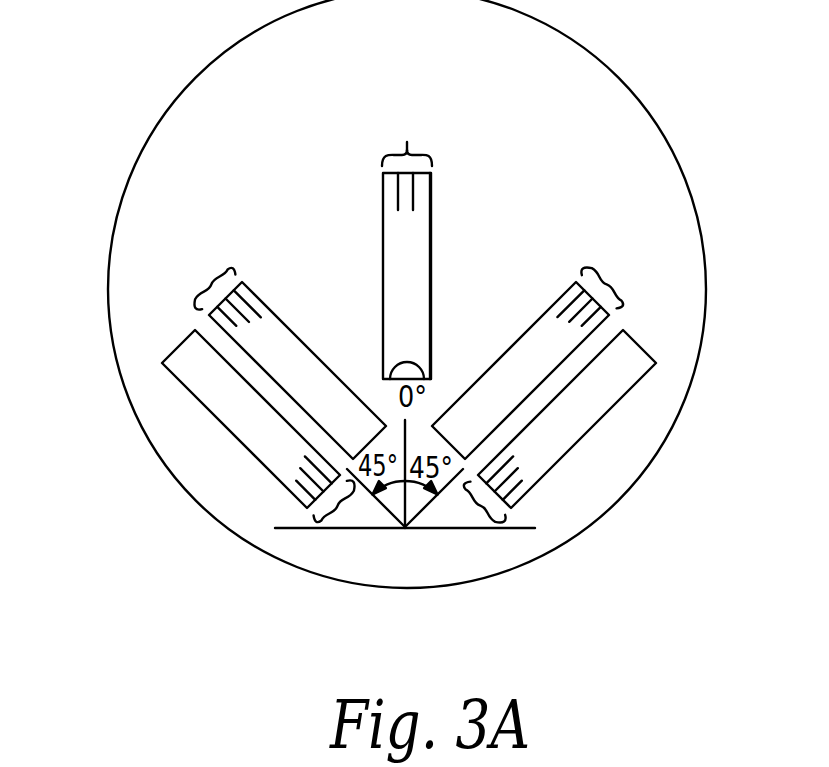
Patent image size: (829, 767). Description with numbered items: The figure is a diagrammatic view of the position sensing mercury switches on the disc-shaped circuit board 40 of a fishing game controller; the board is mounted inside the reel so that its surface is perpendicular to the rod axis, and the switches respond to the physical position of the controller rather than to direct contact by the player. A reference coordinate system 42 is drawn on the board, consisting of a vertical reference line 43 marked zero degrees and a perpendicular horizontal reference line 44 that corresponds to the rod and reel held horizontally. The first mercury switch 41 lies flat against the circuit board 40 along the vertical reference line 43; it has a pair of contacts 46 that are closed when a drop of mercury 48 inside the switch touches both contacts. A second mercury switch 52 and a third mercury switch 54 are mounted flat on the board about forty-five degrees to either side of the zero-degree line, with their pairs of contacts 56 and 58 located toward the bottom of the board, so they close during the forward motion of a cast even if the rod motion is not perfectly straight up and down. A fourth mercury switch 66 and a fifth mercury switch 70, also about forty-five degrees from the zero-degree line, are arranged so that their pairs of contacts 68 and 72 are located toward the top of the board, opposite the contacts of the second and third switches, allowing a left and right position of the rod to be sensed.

The circuit board 40 is at (133, 253).
The first mercury switch 41 is at (415, 242).
The reference coordinate system 42 is at (401, 550).
The vertical reference line 43 is at (405, 507).
The horizontal reference line 44 is at (371, 528).
The pair of contacts 46 is at (407, 142).
The drop of mercury 48 is at (410, 368).
The second mercury switch 52 is at (245, 422).
The third mercury switch 54 is at (598, 405).
The pair of contacts 56 is at (338, 506).
The pair of contacts 58 is at (480, 506).
The fourth mercury switch 66 is at (285, 343).
The pair of contacts 68 is at (211, 284).
The fifth mercury switch 70 is at (540, 320).
The pair of contacts 72 is at (607, 284).